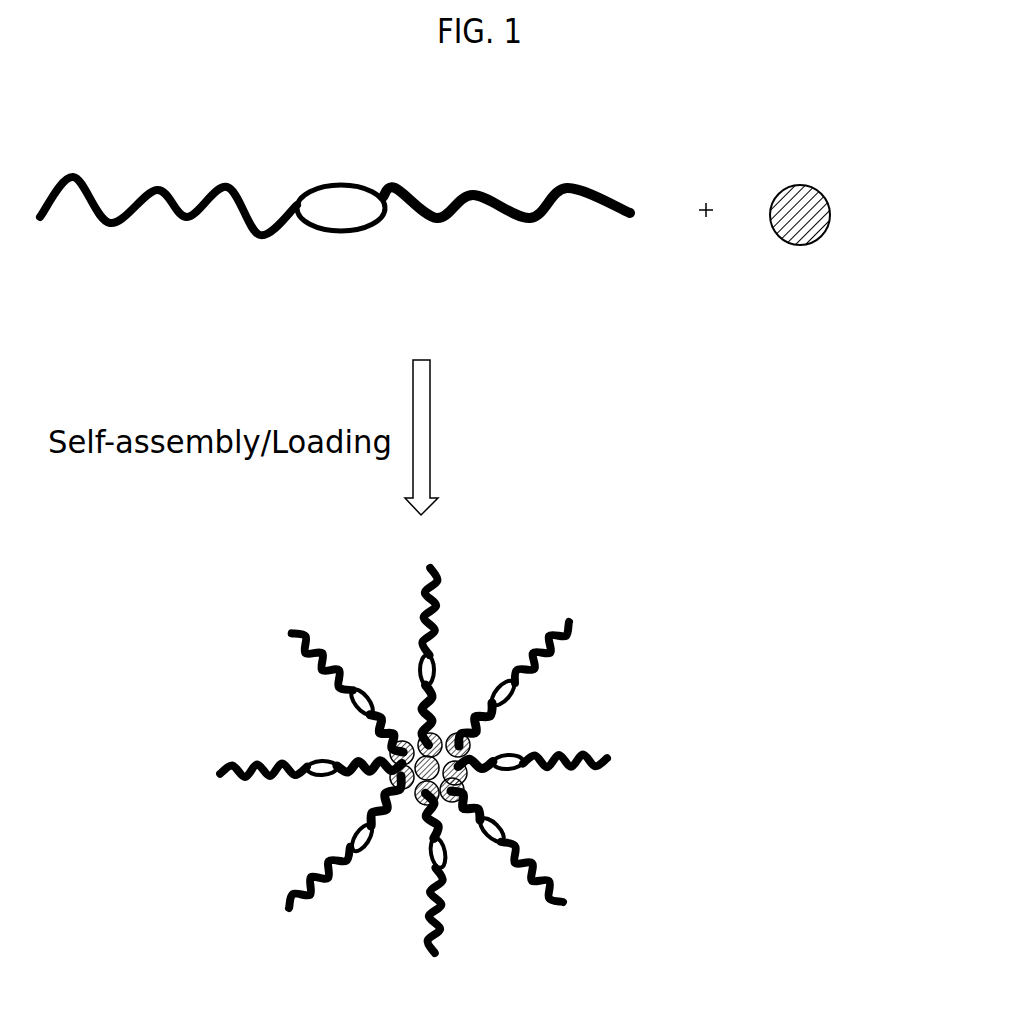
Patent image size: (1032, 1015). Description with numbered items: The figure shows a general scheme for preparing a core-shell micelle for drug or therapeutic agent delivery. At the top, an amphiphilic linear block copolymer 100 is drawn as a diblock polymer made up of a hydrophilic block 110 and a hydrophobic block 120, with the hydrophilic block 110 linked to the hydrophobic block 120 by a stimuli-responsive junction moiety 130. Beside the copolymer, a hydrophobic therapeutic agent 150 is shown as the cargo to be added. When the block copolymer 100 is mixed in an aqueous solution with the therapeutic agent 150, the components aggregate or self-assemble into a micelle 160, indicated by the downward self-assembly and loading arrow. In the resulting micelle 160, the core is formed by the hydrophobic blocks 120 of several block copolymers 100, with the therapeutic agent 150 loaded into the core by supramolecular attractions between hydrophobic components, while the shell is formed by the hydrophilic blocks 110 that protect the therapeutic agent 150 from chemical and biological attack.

The amphiphilic linear block copolymer 100 is at (341, 241).
The hydrophilic block 110 is at (178, 203).
The hydrophobic block 120 is at (515, 169).
The stimuli-responsive junction moiety 130 is at (333, 205).
The therapeutic agent 150 is at (792, 182).
The micelle 160 is at (525, 596).